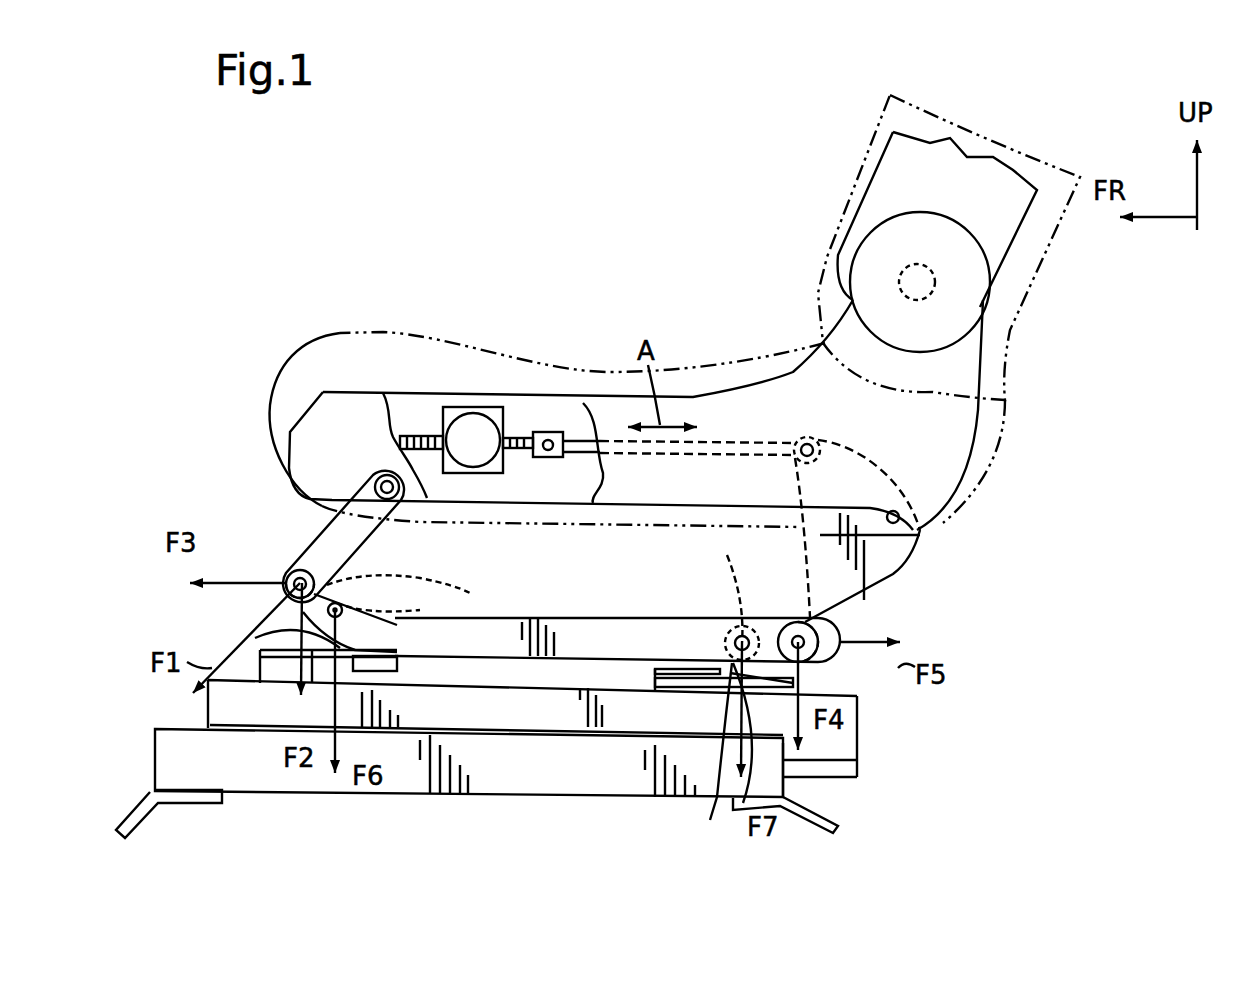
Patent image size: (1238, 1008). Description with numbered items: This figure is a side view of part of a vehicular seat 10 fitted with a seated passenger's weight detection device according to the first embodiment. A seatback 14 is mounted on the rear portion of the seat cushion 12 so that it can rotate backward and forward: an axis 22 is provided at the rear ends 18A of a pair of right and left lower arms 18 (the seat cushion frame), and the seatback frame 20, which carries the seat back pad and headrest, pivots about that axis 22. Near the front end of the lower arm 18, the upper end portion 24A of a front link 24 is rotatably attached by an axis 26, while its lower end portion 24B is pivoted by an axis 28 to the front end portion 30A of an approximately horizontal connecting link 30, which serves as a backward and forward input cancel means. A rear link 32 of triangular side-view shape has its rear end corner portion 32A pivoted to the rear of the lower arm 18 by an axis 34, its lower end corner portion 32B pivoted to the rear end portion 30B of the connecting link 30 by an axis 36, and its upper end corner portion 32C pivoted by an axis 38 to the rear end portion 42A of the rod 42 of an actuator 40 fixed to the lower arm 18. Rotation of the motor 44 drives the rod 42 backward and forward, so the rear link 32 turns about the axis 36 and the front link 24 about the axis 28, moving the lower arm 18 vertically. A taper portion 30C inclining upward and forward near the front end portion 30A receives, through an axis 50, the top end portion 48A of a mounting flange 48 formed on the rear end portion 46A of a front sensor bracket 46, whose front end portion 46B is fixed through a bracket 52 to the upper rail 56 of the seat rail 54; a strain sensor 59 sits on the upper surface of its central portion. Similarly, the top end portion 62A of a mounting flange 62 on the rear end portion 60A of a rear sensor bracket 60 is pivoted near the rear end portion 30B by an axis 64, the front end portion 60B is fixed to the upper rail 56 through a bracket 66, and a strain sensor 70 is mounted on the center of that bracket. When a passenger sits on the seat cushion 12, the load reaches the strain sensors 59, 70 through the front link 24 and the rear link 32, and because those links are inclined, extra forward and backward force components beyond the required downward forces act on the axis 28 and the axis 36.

The vehicular seat 10 is at (645, 265).
The seat cushion 12 is at (610, 370).
The seatback 14 is at (818, 248).
The lower arm 18 is at (700, 393).
The rear end of lower arm 18A is at (1006, 400).
The seatback frame 20 is at (1027, 225).
The axis 22 is at (1005, 328).
The front link 24 is at (305, 530).
The upper end portion of front link 24A is at (383, 467).
The lower end portion of front link 24B is at (280, 593).
The axis 26 is at (400, 505).
The axis 28 is at (348, 568).
The connecting link 30 is at (573, 613).
The front end portion of connecting link 30A is at (288, 575).
The rear end portion of connecting link 30B is at (848, 634).
The taper portion 30C is at (440, 590).
The rear link 32 is at (903, 575).
The rear end corner portion of rear link 32A is at (920, 535).
The lower end corner portion of rear link 32B is at (822, 650).
The upper end corner portion of rear link 32C is at (822, 438).
The axis 34 is at (896, 510).
The axis 36 is at (793, 617).
The axis 38 is at (800, 442).
The actuator 40 is at (501, 405).
The rod 42 is at (630, 455).
The rear end portion of rod 42A is at (810, 462).
The motor 44 is at (505, 458).
The front sensor bracket 46 is at (383, 672).
The rear end portion of front sensor bracket 46A is at (395, 665).
The front end portion of front sensor bracket 46B is at (263, 684).
The mounting flange 48 is at (416, 616).
The top end portion of mounting flange 48A is at (345, 588).
The axis 50 is at (345, 615).
The bracket 52 is at (273, 657).
The seat rail 54 is at (605, 800).
The upper rail 56 is at (469, 763).
The strain sensor 59 is at (257, 637).
The rear sensor bracket 60 is at (753, 688).
The rear end portion of rear sensor bracket 60A is at (800, 673).
The front end portion of rear sensor bracket 60B is at (678, 690).
The mounting flange 62 is at (738, 603).
The top end portion of mounting flange 62A is at (730, 640).
The axis 64 is at (733, 625).
The bracket 66 is at (692, 688).
The strain sensor 70 is at (710, 818).